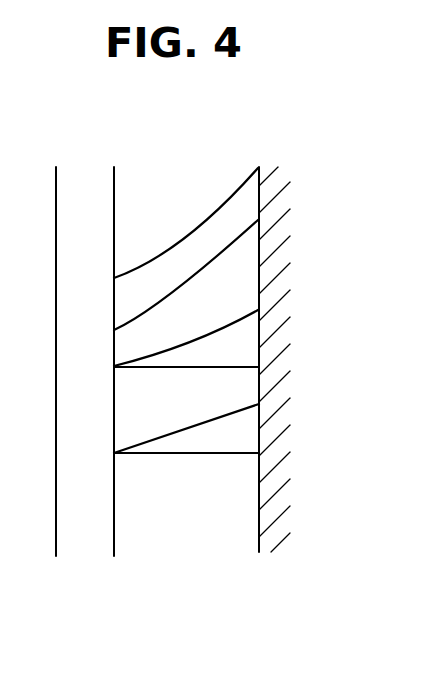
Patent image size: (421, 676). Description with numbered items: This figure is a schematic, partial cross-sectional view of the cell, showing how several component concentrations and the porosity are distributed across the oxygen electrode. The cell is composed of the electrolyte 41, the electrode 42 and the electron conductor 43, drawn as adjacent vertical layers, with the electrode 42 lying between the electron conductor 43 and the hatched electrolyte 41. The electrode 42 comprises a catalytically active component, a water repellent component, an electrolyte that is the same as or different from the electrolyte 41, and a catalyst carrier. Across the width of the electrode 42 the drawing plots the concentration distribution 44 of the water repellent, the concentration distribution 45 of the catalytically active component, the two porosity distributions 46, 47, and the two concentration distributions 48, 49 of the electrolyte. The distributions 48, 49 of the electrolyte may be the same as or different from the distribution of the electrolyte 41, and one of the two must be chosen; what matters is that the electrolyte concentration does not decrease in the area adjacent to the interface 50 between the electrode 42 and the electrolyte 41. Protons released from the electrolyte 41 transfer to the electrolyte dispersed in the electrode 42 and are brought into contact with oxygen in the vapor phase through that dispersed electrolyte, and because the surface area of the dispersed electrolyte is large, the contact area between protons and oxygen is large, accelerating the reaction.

The electrolyte 41 is at (306, 163).
The electrode 42 is at (255, 163).
The electron conductor 43 is at (115, 163).
The concentration distribution of the water repellent 44 is at (185, 241).
The concentration distribution of the catalytically active component 45 is at (227, 252).
The porosity distribution 46 is at (211, 334).
The porosity distribution 47 is at (216, 366).
The concentration distribution of the electrolyte 48 is at (212, 422).
The concentration distribution of the electrolyte 49 is at (188, 455).
The interface 50 is at (262, 553).